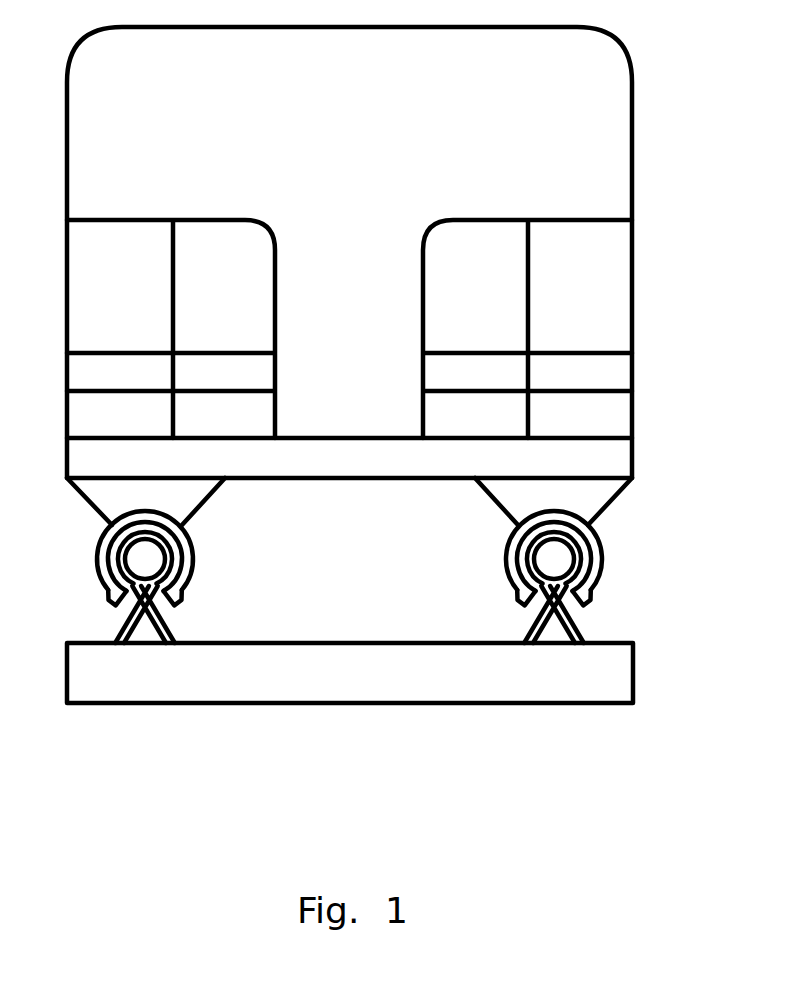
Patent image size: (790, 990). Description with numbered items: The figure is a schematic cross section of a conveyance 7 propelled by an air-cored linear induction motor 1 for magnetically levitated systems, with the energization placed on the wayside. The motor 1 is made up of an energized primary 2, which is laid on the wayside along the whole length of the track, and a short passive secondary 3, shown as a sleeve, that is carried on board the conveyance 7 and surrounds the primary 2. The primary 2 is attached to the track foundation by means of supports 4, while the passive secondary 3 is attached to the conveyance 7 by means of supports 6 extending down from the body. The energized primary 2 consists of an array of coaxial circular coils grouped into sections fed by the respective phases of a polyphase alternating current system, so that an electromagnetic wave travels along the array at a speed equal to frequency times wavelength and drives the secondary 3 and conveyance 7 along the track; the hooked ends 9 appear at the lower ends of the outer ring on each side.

The linear induction motor 1 is at (547, 567).
The energized primary 2 is at (630, 557).
The passive secondary 3 is at (510, 537).
The supports 4 is at (525, 635).
The supports 6 is at (488, 497).
The conveyance 7 is at (633, 414).
The hook end 9 is at (630, 602).